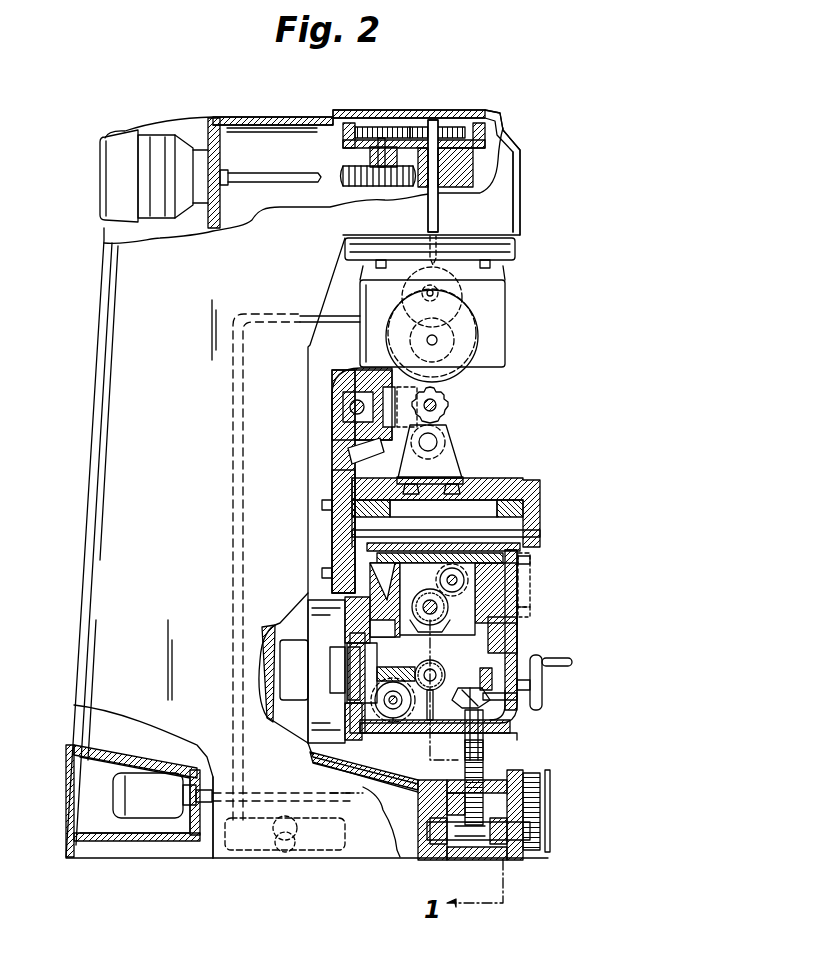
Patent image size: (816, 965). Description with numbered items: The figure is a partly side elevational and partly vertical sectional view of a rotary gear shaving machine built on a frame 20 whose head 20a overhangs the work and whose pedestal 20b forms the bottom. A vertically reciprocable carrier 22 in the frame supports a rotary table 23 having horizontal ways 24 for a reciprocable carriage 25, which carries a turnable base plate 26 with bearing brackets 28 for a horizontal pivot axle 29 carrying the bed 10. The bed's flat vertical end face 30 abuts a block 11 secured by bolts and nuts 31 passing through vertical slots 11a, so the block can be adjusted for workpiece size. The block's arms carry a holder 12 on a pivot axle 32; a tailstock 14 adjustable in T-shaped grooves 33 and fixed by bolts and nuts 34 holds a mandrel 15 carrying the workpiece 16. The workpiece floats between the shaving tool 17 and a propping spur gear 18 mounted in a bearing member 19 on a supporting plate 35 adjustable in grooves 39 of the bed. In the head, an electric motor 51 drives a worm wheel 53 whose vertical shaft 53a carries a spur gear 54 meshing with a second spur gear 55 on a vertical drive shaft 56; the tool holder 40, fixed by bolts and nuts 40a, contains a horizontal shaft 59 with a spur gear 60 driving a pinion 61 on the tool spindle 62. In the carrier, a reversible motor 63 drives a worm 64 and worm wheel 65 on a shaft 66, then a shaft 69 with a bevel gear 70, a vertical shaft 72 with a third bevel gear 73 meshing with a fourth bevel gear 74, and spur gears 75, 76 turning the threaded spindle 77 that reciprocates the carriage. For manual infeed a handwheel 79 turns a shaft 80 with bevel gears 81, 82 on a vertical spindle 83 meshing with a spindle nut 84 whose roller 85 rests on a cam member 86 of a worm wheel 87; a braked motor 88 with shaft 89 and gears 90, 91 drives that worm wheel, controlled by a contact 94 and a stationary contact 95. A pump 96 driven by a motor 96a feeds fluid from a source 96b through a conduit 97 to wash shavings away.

The worktable or bed 10 is at (532, 480).
The adjustable bearing member or block 11 is at (332, 445).
The elongated vertical slots 11a is at (340, 466).
The holder 12 is at (360, 380).
The tailstock 14 is at (418, 433).
The mandrel 15 is at (450, 397).
The workpiece or blank 16 is at (450, 404).
The gear-type shaving cutter or tool 17 is at (452, 376).
The spur gear (propping gear) 18 is at (445, 438).
The bearing member 19 is at (455, 477).
The frame 20 is at (104, 408).
The head of the frame 20a is at (508, 192).
The pedestal 20b is at (215, 860).
The console or carrier 22 is at (518, 648).
The rotary table 23 is at (514, 635).
The horizontal ways 24 is at (437, 599).
The carriage 25 is at (532, 561).
The base plate 26 is at (522, 548).
The bearing brackets 28 is at (558, 504).
The horizontal pivot axle 29 is at (540, 533).
The flat vertical end face 30 is at (332, 550).
The bolts and nuts 31 is at (322, 504).
The horizontal pivot axle 32 is at (343, 407).
The T-shaped grooves or guideways 33 is at (387, 407).
The bolts and nuts 34 is at (407, 407).
The supporting plate 35 is at (450, 494).
The T-shaped guideways or grooves 39 is at (487, 500).
The tool holder 40 is at (500, 333).
The bolts and nuts 40a is at (492, 264).
The electric motor 51 is at (115, 140).
The worm wheel 53 is at (350, 185).
The vertical shaft 53a is at (372, 155).
The spur gear 54 is at (370, 127).
The second spur gear 55 is at (450, 127).
The vertical drive shaft 56 is at (440, 180).
The horizontal shaft 59 is at (433, 281).
The spur gear 60 is at (462, 298).
The pinion 61 is at (442, 337).
The horizontal spindle 62 is at (426, 339).
The reversible electric motor 63 is at (294, 655).
The worm 64 is at (362, 660).
The worm wheel 65 is at (392, 710).
The horizontal shaft 66 is at (402, 718).
The shaft 69 is at (403, 700).
The bevel gear 70 is at (442, 705).
The vertical shaft 72 is at (442, 672).
The third bevel gear 73 is at (400, 665).
The fourth bevel gear 74 is at (382, 624).
The spur gear 75 is at (382, 585).
The spur gear 76 is at (465, 585).
The horizontal spindle 77 is at (441, 610).
The handwheel 79 is at (545, 688).
The horizontal shaft 80 is at (508, 703).
The bevel gear 81 is at (483, 672).
The second bevel gear 82 is at (484, 691).
The vertical spindle 83 is at (466, 750).
The spindle nut 84 is at (486, 775).
The roller 85 is at (455, 793).
The cam member 86 is at (418, 815).
The worm wheel 87 is at (495, 845).
The reversible electric motor 88 is at (115, 795).
The horizontal shaft 89 is at (365, 822).
The spur gear 90 is at (542, 792).
The second spur gear 91 is at (538, 860).
The contact 94 is at (532, 590).
The stationary contact 95 is at (532, 612).
The pump 96 is at (292, 840).
The electric motor 96a is at (282, 852).
The source 96b is at (336, 852).
The fluid conveying conduit 97 is at (232, 416).